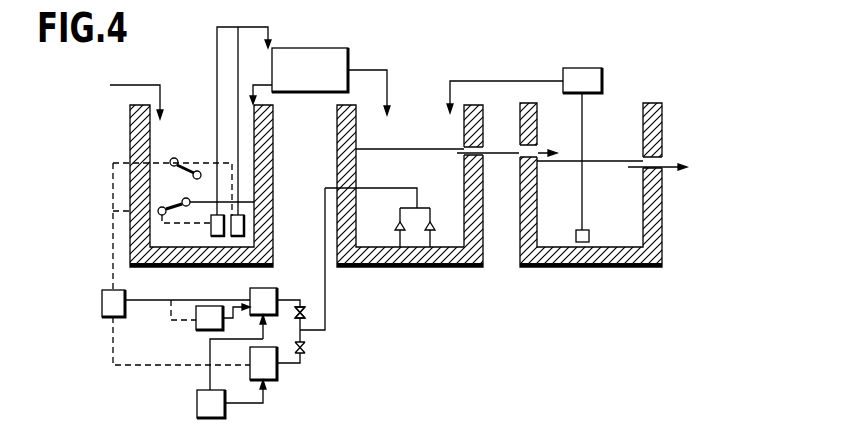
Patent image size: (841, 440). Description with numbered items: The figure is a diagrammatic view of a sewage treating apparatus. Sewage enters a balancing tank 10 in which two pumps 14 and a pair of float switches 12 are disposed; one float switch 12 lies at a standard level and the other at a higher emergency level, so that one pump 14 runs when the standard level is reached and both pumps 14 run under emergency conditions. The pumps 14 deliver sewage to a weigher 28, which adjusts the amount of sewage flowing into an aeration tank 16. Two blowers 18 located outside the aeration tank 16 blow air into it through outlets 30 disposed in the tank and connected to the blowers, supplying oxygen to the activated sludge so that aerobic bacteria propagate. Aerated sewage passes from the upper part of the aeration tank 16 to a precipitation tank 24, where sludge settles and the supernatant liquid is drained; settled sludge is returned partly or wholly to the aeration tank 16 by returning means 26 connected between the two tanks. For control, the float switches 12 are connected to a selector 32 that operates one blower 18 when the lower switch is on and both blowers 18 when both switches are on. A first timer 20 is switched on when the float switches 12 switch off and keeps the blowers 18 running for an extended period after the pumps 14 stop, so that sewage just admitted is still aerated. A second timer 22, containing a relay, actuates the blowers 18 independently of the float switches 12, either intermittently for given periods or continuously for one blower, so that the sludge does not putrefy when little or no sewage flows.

The balancing tank 10 is at (130, 122).
The float switches 12 is at (187, 160).
The pumps 14 is at (244, 225).
The aeration tank 16 is at (337, 126).
The blowers 18 is at (277, 291).
The first timer 20 is at (196, 326).
The second timer 22 is at (197, 405).
The precipitation tank 24 is at (662, 128).
The returning means 26 is at (586, 68).
The weigher 28 is at (332, 48).
The outlets 30 is at (400, 247).
The selector 32 is at (108, 288).